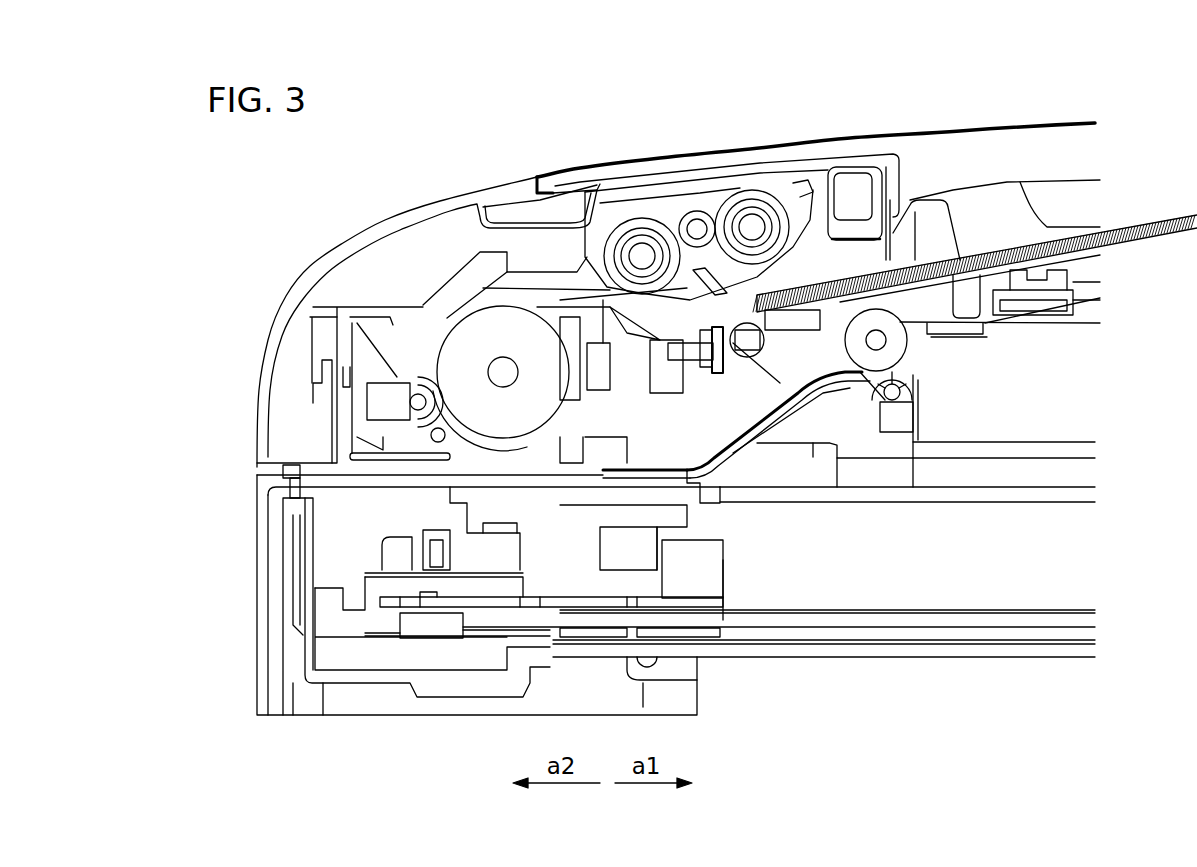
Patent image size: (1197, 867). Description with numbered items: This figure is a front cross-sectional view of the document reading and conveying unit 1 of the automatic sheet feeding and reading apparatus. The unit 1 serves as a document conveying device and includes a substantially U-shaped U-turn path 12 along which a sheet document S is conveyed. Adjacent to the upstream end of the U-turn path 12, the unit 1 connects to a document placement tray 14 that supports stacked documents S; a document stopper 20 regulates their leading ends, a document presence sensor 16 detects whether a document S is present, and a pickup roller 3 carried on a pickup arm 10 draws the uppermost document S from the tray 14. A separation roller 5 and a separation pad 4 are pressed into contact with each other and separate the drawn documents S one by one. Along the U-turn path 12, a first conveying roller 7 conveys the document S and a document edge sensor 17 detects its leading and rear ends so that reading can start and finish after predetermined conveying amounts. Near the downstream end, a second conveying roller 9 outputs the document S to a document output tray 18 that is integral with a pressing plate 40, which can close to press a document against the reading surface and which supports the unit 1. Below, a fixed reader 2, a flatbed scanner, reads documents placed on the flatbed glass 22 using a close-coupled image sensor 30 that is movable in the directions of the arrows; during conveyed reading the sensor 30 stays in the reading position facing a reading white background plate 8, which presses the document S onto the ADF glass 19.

The document reading and conveying unit 1 is at (447, 198).
The fixed reader 2 is at (913, 580).
The pickup roller 3 is at (750, 190).
The separation pad 4 is at (692, 293).
The separation roller 5 is at (613, 220).
The first conveying roller 7 is at (458, 372).
The reading white background plate 8 is at (585, 465).
The second conveying roller 9 is at (897, 350).
The pickup arm 10 is at (685, 195).
The U-turn path 12 is at (450, 318).
The document placement tray 14 is at (998, 280).
The document presence sensor 16 is at (810, 240).
The document edge sensor 17 is at (473, 433).
The document output tray 18 is at (1057, 433).
The ADF glass 19 is at (662, 487).
The document stopper 20 is at (727, 355).
The flatbed glass 22 is at (993, 490).
The close-coupled image sensor 30 is at (583, 550).
The pressing plate 40 is at (1027, 473).
The document S is at (1120, 227).